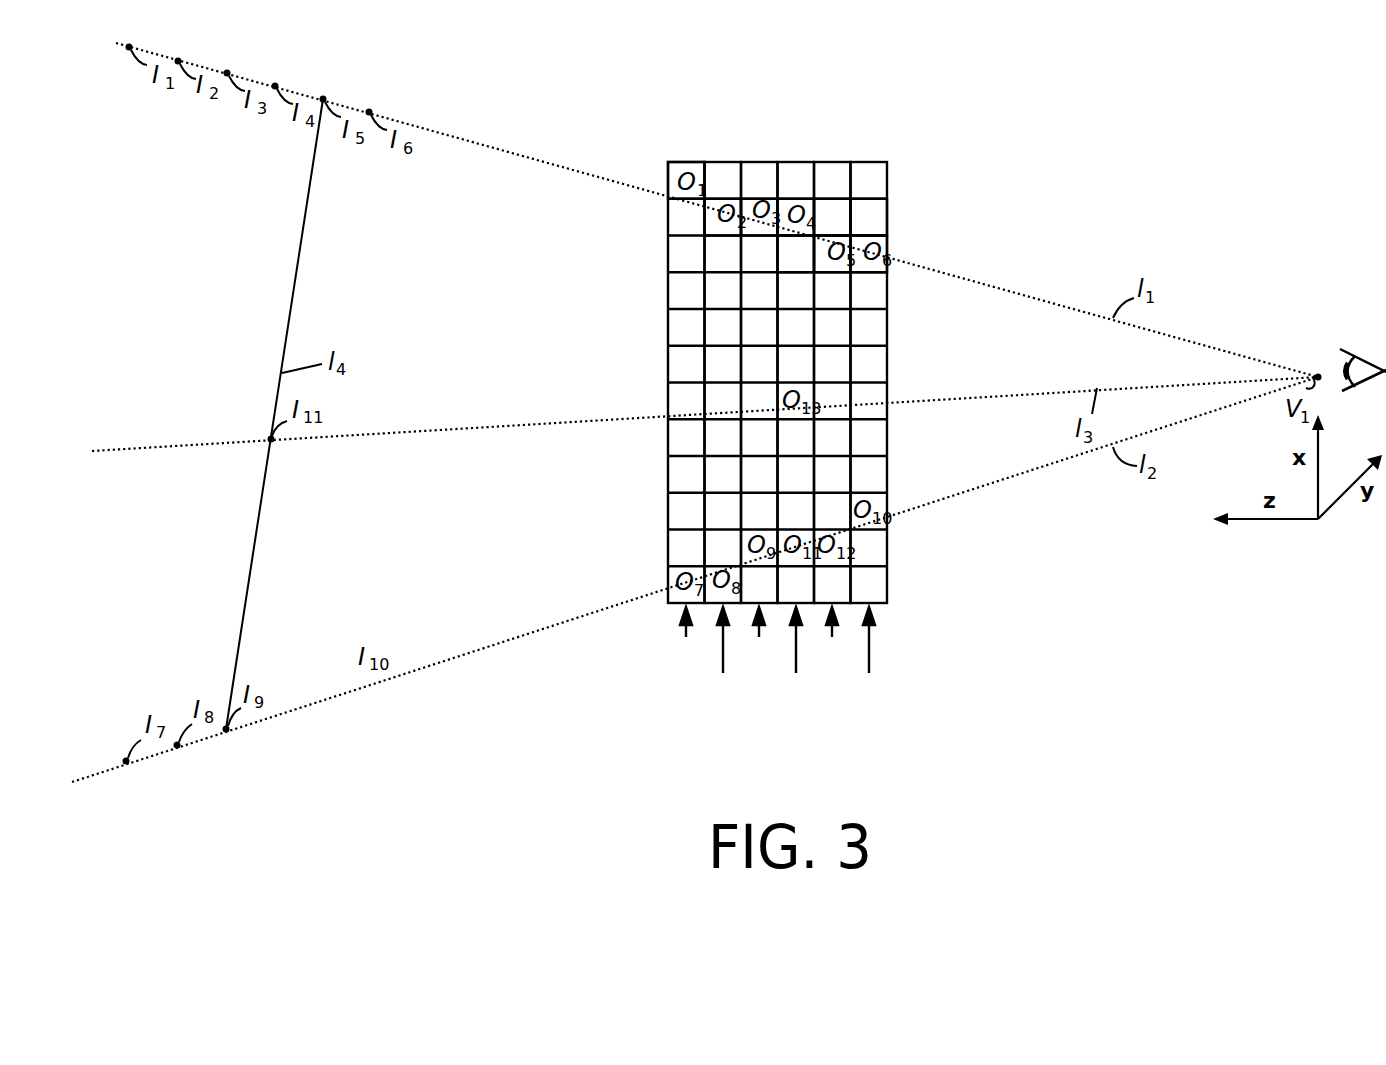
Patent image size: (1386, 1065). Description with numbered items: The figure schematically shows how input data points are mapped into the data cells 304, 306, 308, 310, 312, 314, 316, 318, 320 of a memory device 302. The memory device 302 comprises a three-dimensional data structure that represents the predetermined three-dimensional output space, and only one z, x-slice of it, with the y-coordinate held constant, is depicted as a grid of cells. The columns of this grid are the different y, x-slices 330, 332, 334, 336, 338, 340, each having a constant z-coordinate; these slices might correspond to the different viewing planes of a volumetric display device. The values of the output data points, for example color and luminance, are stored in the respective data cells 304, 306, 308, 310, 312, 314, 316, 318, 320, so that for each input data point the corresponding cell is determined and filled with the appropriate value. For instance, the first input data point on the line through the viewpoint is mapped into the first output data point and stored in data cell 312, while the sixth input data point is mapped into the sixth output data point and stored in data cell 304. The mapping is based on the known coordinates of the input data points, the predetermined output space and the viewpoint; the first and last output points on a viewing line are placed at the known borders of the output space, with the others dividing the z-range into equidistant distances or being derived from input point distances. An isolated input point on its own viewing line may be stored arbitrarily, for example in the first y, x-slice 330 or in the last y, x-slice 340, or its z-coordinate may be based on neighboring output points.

The memory device 302 is at (783, 405).
The data cell 304 is at (882, 247).
The data cell 306 is at (810, 200).
The data cell 308 is at (838, 203).
The data cell 310 is at (882, 213).
The data cell 312 is at (676, 172).
The data cell 314 is at (718, 227).
The data cell 316 is at (758, 228).
The data cell 318 is at (837, 263).
The data cell 320 is at (795, 263).
The first y, x-slice 330 is at (688, 415).
The y, x-slice 332 is at (720, 433).
The y, x-slice 334 is at (762, 415).
The y, x-slice 336 is at (797, 433).
The y, x-slice 338 is at (835, 415).
The last y, x-slice 340 is at (873, 433).